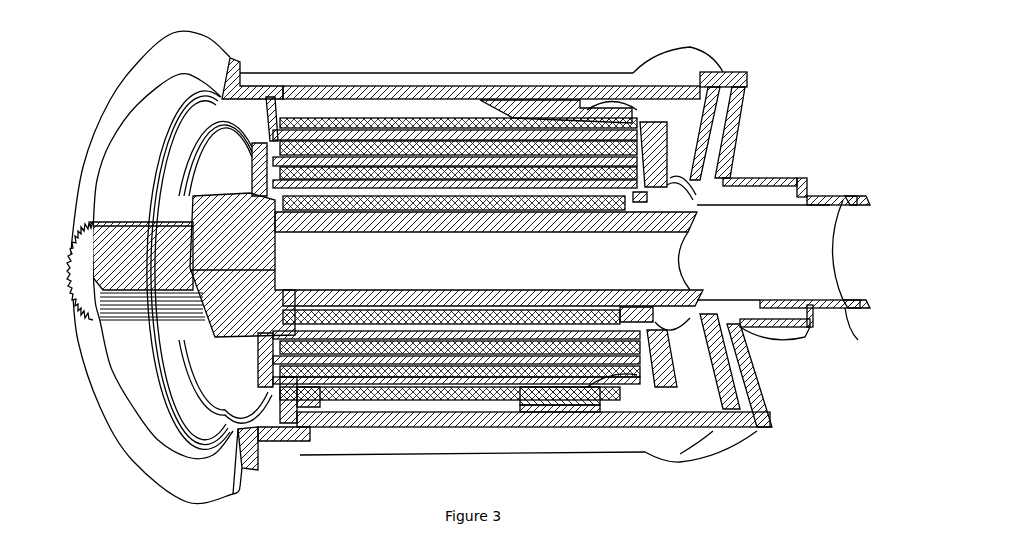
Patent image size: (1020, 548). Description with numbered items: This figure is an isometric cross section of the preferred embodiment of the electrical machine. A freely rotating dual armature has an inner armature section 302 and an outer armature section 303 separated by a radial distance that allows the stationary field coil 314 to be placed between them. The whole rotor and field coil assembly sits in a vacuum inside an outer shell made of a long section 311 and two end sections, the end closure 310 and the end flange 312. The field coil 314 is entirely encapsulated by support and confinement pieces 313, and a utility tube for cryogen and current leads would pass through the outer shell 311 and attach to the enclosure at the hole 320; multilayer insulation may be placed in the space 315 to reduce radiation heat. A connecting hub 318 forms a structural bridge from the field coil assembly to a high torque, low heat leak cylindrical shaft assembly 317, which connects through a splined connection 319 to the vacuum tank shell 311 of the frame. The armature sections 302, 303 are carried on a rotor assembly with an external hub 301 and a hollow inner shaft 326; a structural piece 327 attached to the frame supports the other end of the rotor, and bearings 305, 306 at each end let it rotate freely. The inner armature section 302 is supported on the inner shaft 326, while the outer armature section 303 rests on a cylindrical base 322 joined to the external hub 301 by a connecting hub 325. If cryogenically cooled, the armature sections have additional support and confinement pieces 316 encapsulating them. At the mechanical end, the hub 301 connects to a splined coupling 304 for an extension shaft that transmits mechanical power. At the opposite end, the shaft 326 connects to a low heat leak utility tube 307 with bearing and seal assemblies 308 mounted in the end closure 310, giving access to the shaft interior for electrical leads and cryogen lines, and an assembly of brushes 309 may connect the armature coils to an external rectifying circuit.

The external hub 301 is at (183, 213).
The inner armature section 302 is at (253, 190).
The outer armature section 303 is at (325, 170).
The splined coupling 304 is at (97, 210).
The bearing 305 is at (275, 382).
The bearing 306 is at (735, 158).
The low heat leak utility tube 307 is at (745, 195).
The bearing and seal assemblies 308 is at (808, 190).
The assembly of brushes 309 is at (843, 303).
The end closure 310 is at (763, 332).
The outer shell long section 311 is at (397, 452).
The end flange 312 is at (222, 488).
The support and confinement pieces 313 is at (285, 98).
The stationary field coil 314 is at (300, 117).
The space 315 is at (350, 180).
The support and confinement pieces 316 is at (402, 190).
The cylindrical shaft assembly 317 is at (585, 130).
The connecting hub 318 is at (638, 112).
The splined connection 319 is at (527, 105).
The hole 320 is at (690, 190).
The cylindrical base 322 is at (266, 137).
The connecting hub 325 is at (240, 160).
The inner shaft 326 is at (373, 232).
The structural piece 327 is at (745, 95).